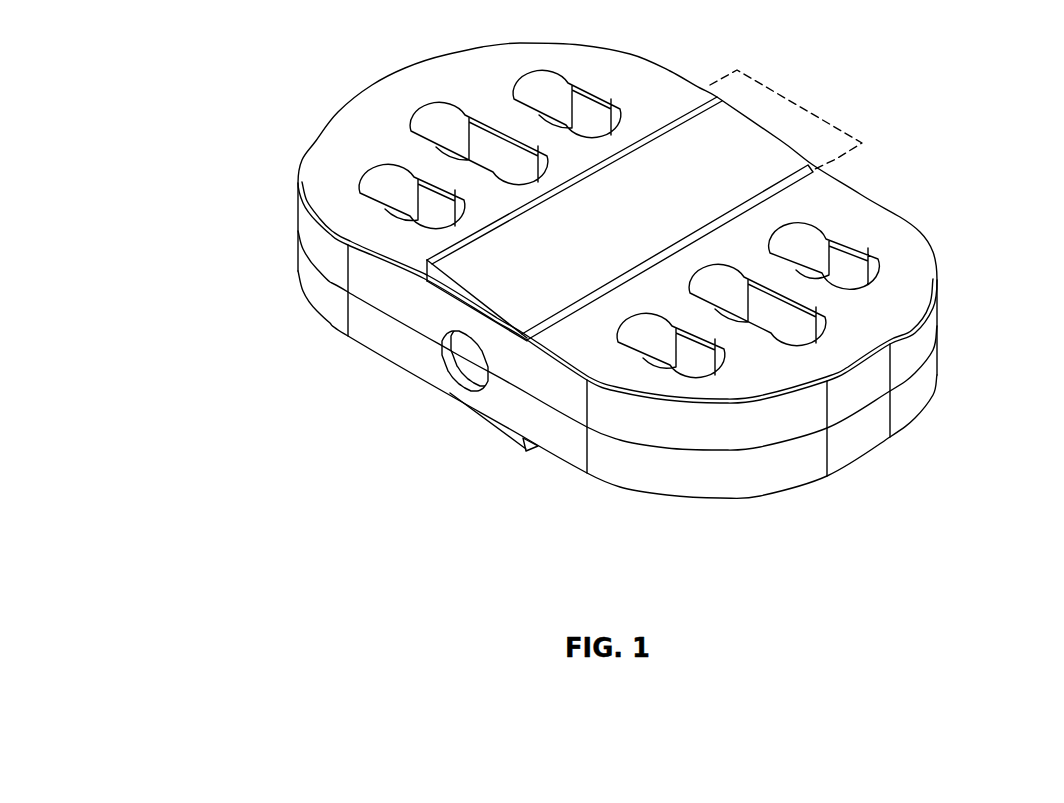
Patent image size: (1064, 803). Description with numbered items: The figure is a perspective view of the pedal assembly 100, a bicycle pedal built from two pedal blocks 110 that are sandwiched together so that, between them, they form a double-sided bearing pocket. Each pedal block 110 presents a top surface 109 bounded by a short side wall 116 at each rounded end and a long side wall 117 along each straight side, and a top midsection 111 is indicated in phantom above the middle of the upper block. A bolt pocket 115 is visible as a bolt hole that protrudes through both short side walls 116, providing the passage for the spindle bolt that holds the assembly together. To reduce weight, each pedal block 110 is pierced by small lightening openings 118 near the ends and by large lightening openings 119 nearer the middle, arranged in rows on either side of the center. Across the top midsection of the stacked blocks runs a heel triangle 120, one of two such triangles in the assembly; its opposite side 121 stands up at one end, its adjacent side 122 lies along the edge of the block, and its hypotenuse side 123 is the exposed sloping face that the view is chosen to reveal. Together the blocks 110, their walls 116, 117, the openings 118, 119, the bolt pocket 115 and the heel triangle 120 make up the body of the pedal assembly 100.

The pedal assembly 100 is at (183, 222).
The top surface 109 is at (608, 70).
The pedal block 110 is at (941, 255).
The top midsection 111 is at (801, 108).
The bolt pocket 115 is at (447, 361).
The short side wall 116 is at (359, 101).
The long side wall 117 is at (868, 192).
The small lightening openings 118 is at (603, 120).
The large lightening openings 119 is at (444, 110).
The heel triangle 120 is at (584, 190).
The opposite side 121 is at (424, 261).
The adjacent side 122 is at (468, 308).
The hypotenuse side 123 is at (454, 281).